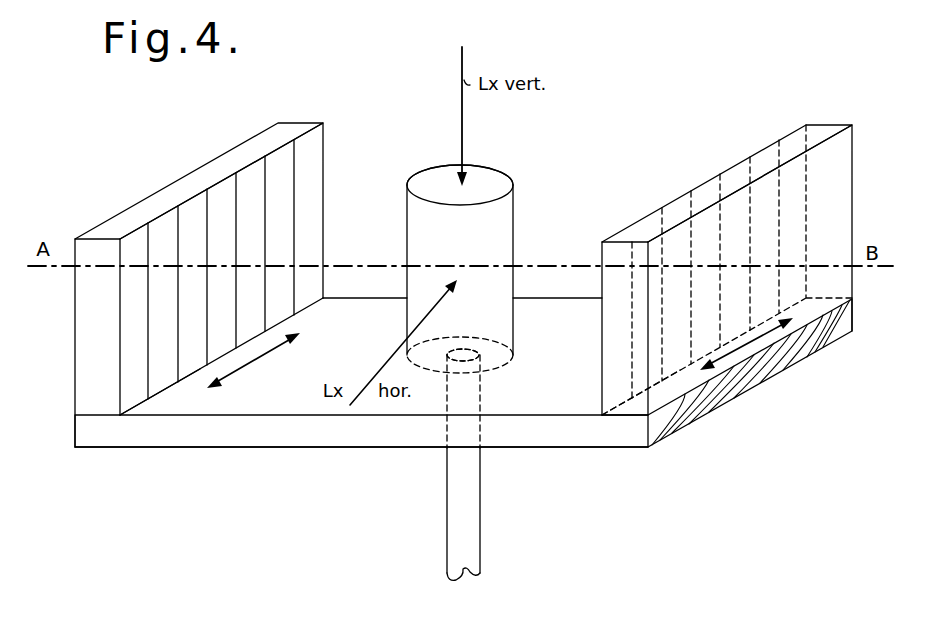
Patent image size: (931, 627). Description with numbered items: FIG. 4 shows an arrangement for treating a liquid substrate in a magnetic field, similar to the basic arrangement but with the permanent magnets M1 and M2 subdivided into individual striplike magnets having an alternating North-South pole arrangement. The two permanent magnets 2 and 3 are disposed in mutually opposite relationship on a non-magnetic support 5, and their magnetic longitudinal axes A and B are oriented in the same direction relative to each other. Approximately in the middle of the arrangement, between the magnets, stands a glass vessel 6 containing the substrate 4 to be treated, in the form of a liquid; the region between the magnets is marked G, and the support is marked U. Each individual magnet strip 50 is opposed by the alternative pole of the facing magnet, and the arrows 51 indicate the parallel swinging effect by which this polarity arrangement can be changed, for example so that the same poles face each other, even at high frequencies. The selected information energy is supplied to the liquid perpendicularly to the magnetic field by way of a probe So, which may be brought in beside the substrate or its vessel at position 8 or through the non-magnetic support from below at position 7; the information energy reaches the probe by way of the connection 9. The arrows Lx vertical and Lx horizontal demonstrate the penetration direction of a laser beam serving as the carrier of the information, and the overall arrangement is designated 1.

The magnetic bearing device 1 is at (314, 451).
The permanent magnet 2 is at (303, 124).
The permanent magnet 3 is at (812, 125).
The substrate 4 is at (513, 223).
The non-magnetic support 5 is at (223, 435).
The glass vessel 6 is at (498, 173).
The probe 7 is at (466, 355).
The probe 8 is at (483, 396).
The connection 9 is at (415, 590).
The magnet strip 50 is at (139, 391).
The arrows 51 is at (253, 361).
The permanent magnet M1 is at (176, 186).
The permanent magnet M2 is at (772, 153).
The probe So is at (482, 532).
The gap G is at (463, 250).
The support U is at (543, 433).